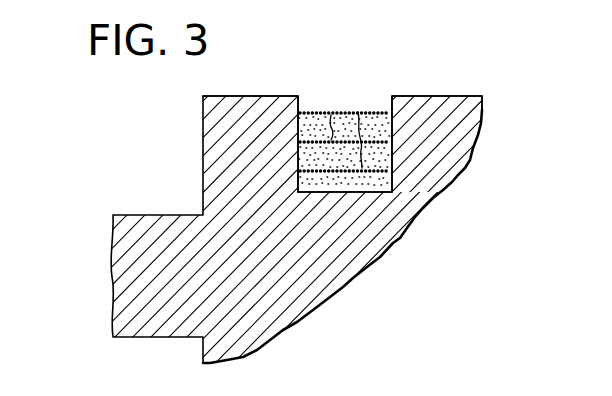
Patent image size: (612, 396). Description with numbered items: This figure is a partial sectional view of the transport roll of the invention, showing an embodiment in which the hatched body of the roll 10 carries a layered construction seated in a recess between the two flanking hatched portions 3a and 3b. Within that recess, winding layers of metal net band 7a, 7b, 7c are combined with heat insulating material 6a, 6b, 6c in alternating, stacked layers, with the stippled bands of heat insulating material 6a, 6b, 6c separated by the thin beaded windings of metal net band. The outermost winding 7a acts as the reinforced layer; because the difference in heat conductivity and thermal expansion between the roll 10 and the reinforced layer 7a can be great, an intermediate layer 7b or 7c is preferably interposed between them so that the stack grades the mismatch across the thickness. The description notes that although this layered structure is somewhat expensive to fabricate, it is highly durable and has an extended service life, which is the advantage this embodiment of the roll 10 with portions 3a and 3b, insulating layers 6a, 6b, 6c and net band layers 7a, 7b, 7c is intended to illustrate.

The roll 10 is at (152, 215).
The first block portion 3a is at (250, 96).
The second block portion 3b is at (433, 95).
The heat insulating material 6a is at (383, 120).
The heat insulating material 6b is at (390, 156).
The heat insulating material 6c is at (384, 186).
The reinforced layer 7a is at (307, 110).
The intermediate layer 7b is at (327, 110).
The intermediate layer 7c is at (358, 112).